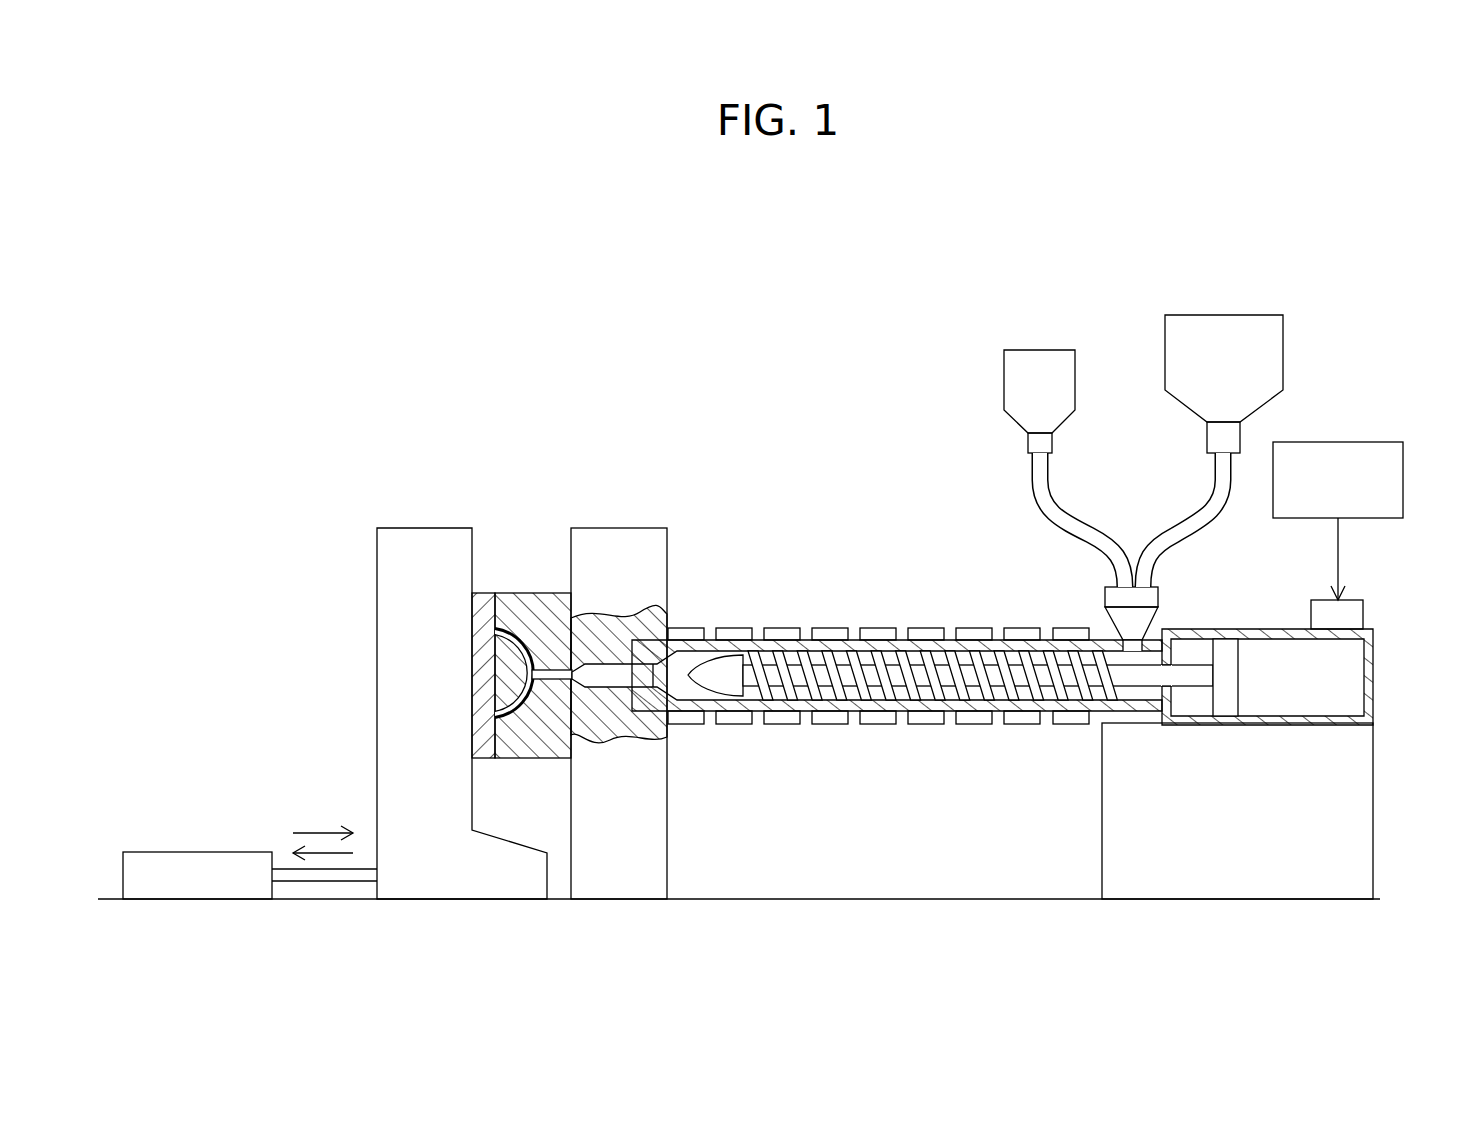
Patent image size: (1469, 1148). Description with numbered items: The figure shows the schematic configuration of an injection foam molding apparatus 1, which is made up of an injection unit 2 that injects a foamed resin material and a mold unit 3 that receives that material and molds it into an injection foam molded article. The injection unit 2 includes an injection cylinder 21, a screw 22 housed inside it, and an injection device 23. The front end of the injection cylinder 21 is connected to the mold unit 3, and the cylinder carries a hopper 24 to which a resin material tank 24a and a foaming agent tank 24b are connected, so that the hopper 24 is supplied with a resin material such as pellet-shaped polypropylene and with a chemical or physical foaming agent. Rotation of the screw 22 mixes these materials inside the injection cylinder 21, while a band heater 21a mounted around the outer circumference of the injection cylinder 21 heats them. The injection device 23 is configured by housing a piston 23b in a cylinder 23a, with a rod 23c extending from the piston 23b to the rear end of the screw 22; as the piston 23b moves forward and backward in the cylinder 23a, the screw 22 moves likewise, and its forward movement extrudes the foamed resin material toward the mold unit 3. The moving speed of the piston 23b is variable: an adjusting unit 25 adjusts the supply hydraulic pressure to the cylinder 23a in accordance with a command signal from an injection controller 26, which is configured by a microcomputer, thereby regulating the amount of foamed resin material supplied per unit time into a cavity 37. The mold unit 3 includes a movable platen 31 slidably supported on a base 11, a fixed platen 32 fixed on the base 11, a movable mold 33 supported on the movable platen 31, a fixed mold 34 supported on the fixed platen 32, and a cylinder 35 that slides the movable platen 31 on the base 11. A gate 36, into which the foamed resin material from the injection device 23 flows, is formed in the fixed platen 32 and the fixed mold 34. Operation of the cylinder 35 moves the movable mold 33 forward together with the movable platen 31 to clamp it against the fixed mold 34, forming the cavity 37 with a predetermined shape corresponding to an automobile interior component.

The injection foam molding apparatus 1 is at (362, 402).
The injection unit 2 is at (1020, 521).
The mold unit 3 is at (442, 612).
The base 11 is at (843, 899).
The injection cylinder 21 is at (806, 638).
The band heater 21a is at (876, 638).
The screw 22 is at (958, 684).
The injection device 23 is at (1315, 624).
The cylinder 23a is at (1375, 683).
The piston 23b is at (1228, 678).
The rod 23c is at (1187, 662).
The hopper 24 is at (1116, 617).
The resin material tank 24a is at (1227, 328).
The foaming agent tank 24b is at (1037, 362).
The adjusting unit 25 is at (1366, 613).
The injection controller 26 is at (1362, 442).
The movable platen 31 is at (392, 608).
The fixed platen 32 is at (633, 540).
The movable mold 33 is at (480, 605).
The fixed mold 34 is at (526, 608).
The cylinder 35 is at (191, 862).
The gate 36 is at (553, 695).
The cavity 37 is at (512, 690).